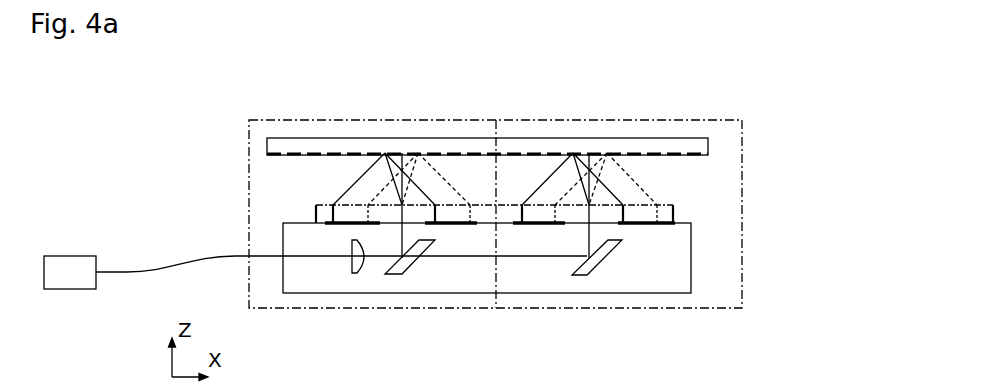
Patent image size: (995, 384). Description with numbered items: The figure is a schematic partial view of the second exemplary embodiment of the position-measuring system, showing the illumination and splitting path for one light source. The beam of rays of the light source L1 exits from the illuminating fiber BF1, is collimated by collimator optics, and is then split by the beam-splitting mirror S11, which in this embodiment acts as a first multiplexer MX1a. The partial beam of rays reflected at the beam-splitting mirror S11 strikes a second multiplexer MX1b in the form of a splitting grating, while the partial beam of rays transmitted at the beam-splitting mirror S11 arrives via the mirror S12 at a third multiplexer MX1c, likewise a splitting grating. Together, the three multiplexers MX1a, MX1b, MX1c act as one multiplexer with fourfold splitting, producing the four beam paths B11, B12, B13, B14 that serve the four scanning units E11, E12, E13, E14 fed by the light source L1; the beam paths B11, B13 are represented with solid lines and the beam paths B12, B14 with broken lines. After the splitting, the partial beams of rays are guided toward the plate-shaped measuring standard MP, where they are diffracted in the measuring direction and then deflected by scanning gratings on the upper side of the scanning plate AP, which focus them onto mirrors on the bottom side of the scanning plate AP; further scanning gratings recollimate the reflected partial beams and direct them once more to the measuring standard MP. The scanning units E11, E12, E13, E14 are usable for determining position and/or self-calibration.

The measuring standard MP is at (660, 148).
The scanning plate AP is at (669, 214).
The beam path B11 is at (336, 185).
The beam path B12 is at (454, 175).
The beam path B13 is at (541, 175).
The beam path B14 is at (652, 182).
The first multiplexer MX1a is at (387, 264).
The second multiplexer MX1b is at (394, 213).
The third multiplexer MX1c is at (596, 213).
The scanning unit E11 is at (352, 283).
The scanning unit E12 is at (425, 283).
The scanning unit E13 is at (549, 283).
The scanning unit E14 is at (634, 283).
The beam-splitting mirror S11 is at (417, 268).
The mirror S12 is at (607, 270).
The light source L1 is at (70, 257).
The illuminating fiber BF1 is at (341, 256).